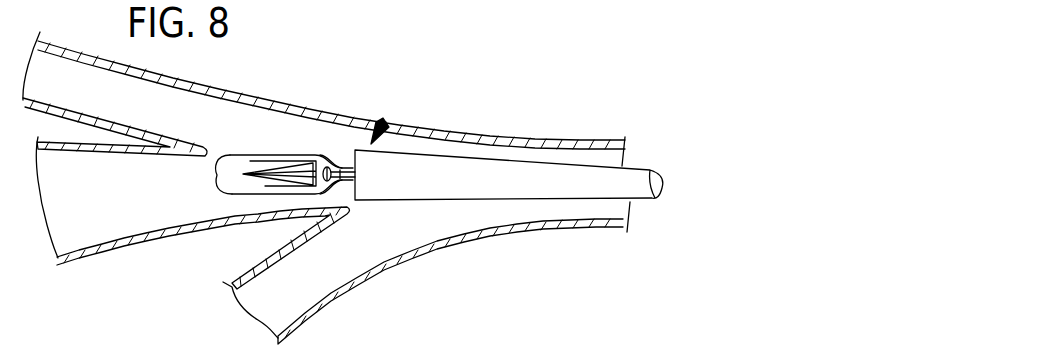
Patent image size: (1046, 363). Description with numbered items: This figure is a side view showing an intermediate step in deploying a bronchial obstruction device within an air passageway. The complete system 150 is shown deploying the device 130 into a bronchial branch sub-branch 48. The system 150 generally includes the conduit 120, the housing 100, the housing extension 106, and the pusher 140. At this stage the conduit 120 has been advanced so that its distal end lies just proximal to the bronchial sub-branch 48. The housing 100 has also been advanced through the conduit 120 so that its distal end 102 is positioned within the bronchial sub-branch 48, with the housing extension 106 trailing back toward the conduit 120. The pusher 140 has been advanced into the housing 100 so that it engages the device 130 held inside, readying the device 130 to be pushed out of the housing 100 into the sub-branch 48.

The bronchial branch sub-branch 48 is at (178, 212).
The housing 100 is at (250, 156).
The distal end 102 is at (217, 185).
The housing extension 106 is at (341, 166).
The conduit 120 is at (452, 148).
The device 130 is at (305, 172).
The pusher 140 is at (345, 183).
The system 150 is at (383, 120).